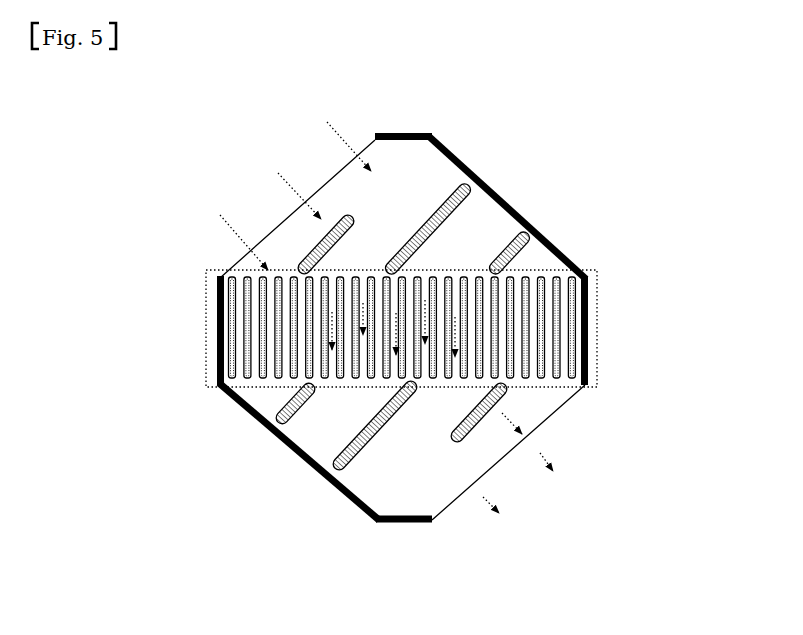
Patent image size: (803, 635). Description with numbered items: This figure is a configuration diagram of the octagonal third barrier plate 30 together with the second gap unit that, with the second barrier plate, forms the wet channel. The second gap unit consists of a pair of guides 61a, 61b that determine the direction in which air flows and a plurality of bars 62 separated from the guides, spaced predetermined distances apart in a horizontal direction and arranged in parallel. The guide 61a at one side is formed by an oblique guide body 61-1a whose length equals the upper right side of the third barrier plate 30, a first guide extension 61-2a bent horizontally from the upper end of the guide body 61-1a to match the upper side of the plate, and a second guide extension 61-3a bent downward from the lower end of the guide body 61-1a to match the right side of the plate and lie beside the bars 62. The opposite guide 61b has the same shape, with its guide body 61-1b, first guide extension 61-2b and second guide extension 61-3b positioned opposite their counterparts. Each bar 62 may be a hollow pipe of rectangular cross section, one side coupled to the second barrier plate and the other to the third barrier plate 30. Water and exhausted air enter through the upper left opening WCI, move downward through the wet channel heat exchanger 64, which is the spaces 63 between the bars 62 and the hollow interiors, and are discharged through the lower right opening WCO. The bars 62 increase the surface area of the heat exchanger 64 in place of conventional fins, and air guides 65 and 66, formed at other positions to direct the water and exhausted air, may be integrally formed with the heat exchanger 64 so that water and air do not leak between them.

The third barrier plate 30 is at (366, 142).
The guide 61a is at (513, 238).
The first guide extension 61-2a is at (403, 133).
The guide body 61-1a is at (515, 213).
The second guide extension 61-3a is at (590, 312).
The guide 61b is at (273, 406).
The second guide extension 61-3b is at (217, 338).
The guide body 61-1b is at (290, 445).
The first guide extension 61-2b is at (405, 525).
The bars 62 is at (513, 277).
The spaces 63 is at (228, 270).
The wet channel heat exchanger 64 is at (600, 340).
The air guide 65 is at (390, 217).
The air guide 66 is at (418, 462).
The upper left opening WCI is at (255, 152).
The lower right opening WCO is at (572, 483).